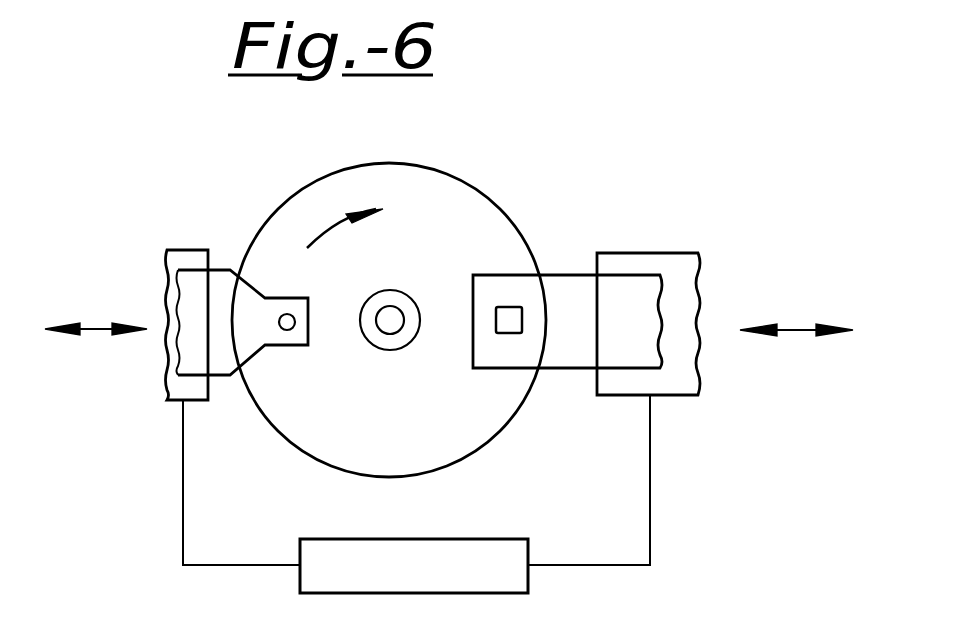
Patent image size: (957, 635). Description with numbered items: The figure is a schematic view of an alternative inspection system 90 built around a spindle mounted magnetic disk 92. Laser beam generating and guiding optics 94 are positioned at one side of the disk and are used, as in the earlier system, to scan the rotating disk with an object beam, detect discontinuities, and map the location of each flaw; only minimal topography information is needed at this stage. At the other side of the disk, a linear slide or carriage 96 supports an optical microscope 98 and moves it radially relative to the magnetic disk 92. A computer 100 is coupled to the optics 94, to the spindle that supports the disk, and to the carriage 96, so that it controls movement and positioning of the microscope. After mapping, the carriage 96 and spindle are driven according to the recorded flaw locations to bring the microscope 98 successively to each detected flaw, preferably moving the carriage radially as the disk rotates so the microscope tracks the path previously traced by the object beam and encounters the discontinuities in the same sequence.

The alternative system 90 is at (226, 188).
The magnetic disk 92 is at (472, 197).
The laser beam generating and guiding optics 94 is at (287, 345).
The linear slide or carriage 96 is at (700, 377).
The optical microscope 98 is at (522, 318).
The computer 100 is at (475, 539).